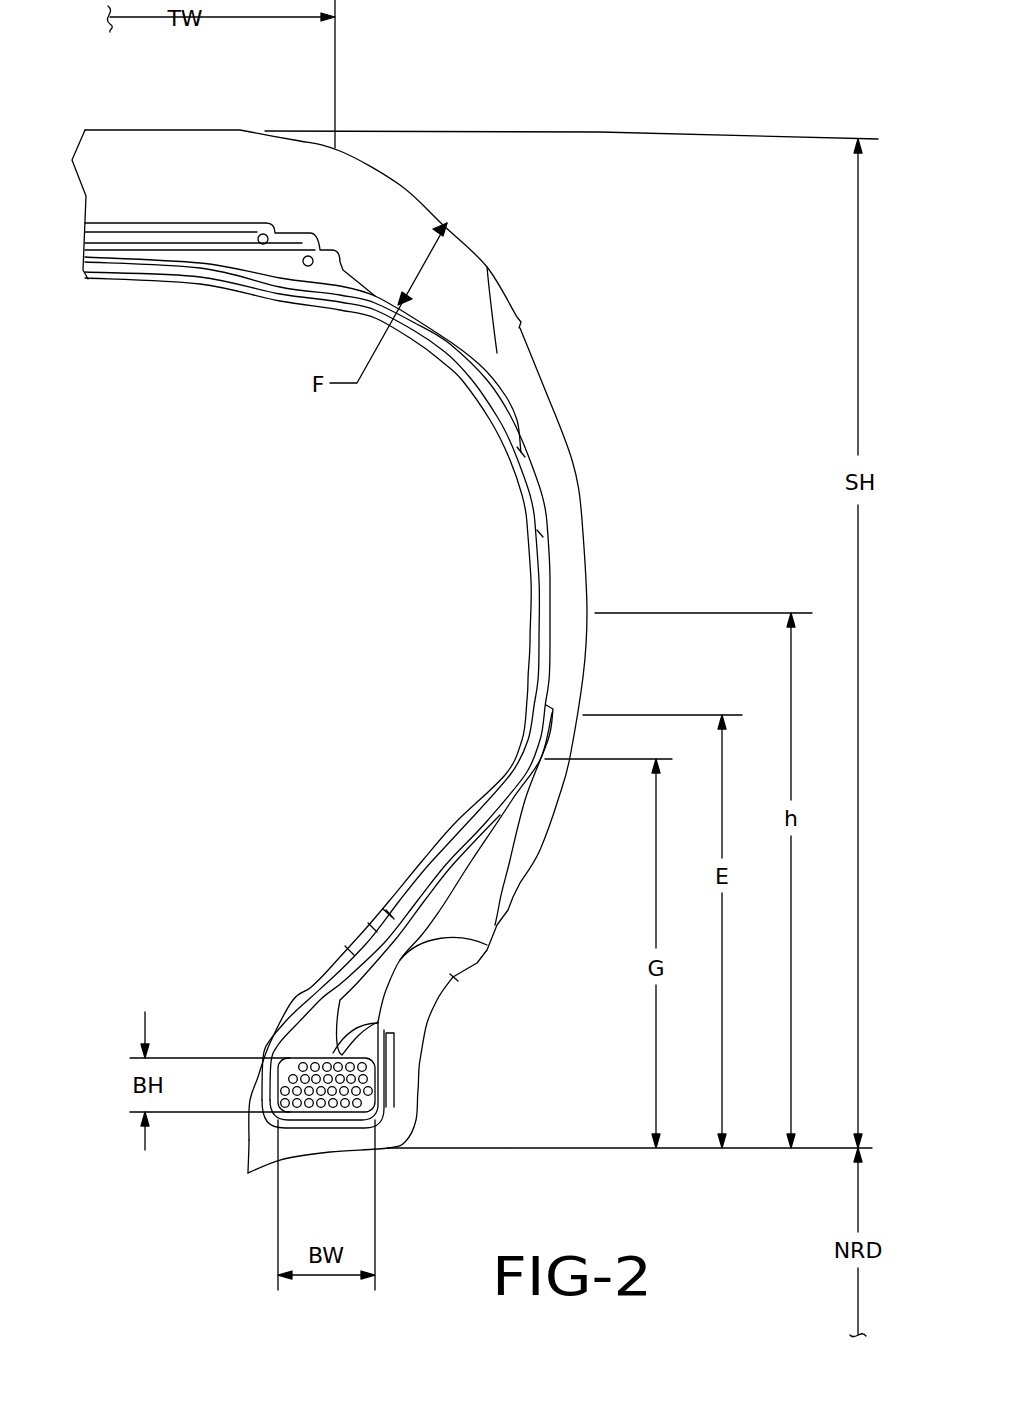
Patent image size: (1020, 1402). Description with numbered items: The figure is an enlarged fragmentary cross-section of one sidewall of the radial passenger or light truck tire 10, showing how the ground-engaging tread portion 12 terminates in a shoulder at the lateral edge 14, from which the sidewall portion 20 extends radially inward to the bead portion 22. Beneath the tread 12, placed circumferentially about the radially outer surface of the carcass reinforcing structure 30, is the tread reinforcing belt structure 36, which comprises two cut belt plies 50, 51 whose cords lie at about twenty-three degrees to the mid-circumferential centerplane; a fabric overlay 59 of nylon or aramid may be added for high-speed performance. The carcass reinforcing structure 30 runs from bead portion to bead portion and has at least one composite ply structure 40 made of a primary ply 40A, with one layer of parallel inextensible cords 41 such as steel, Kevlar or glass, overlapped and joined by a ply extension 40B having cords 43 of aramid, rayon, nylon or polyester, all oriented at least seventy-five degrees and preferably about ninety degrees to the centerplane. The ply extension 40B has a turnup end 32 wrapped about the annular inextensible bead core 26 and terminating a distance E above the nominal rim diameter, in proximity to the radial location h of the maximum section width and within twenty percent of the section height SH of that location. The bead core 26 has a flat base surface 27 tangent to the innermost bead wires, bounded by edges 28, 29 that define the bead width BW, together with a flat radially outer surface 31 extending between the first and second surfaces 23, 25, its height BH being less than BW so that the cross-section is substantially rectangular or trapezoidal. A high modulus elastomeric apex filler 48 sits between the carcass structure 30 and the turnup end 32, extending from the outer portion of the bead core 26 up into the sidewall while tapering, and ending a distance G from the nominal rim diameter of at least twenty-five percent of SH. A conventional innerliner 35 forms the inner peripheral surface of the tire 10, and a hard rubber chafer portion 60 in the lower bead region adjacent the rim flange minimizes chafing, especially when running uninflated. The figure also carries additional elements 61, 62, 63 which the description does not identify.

The tire 10 is at (566, 270).
The tread portion 12 is at (126, 216).
The lateral edge of tread 14 is at (352, 152).
The sidewall portion 20 is at (584, 525).
The bead portion 22 is at (353, 1017).
The first surface of bead core 23 is at (273, 1078).
The second surface of bead core 25 is at (379, 1078).
The bead core 26 is at (327, 1082).
The flat base surface 27 is at (337, 1121).
The edge of flat base surface 28 is at (248, 1176).
The edge of flat base surface 29 is at (385, 1093).
The carcass reinforcing structure 30 is at (107, 296).
The flat radially outer surface 31 is at (381, 1021).
The turnup end 32 is at (385, 925).
The innerliner 35 is at (372, 927).
The tread reinforcing belt structure 36 is at (183, 227).
The composite ply structure 40 is at (552, 484).
The primary ply 40A is at (521, 450).
The ply extension 40B is at (386, 912).
The cords of primary ply 41 is at (540, 533).
The cords of ply extension 43 is at (388, 913).
The apex filler 48 is at (430, 938).
The belt ply 50 is at (243, 218).
The belt ply 51 is at (252, 262).
The fabric overlay 59 is at (241, 232).
The hard rubber chafer portion 60 is at (456, 979).
The first carcass ply 61 is at (300, 1018).
The ply end 62 is at (349, 950).
The chipper 63 is at (395, 1037).